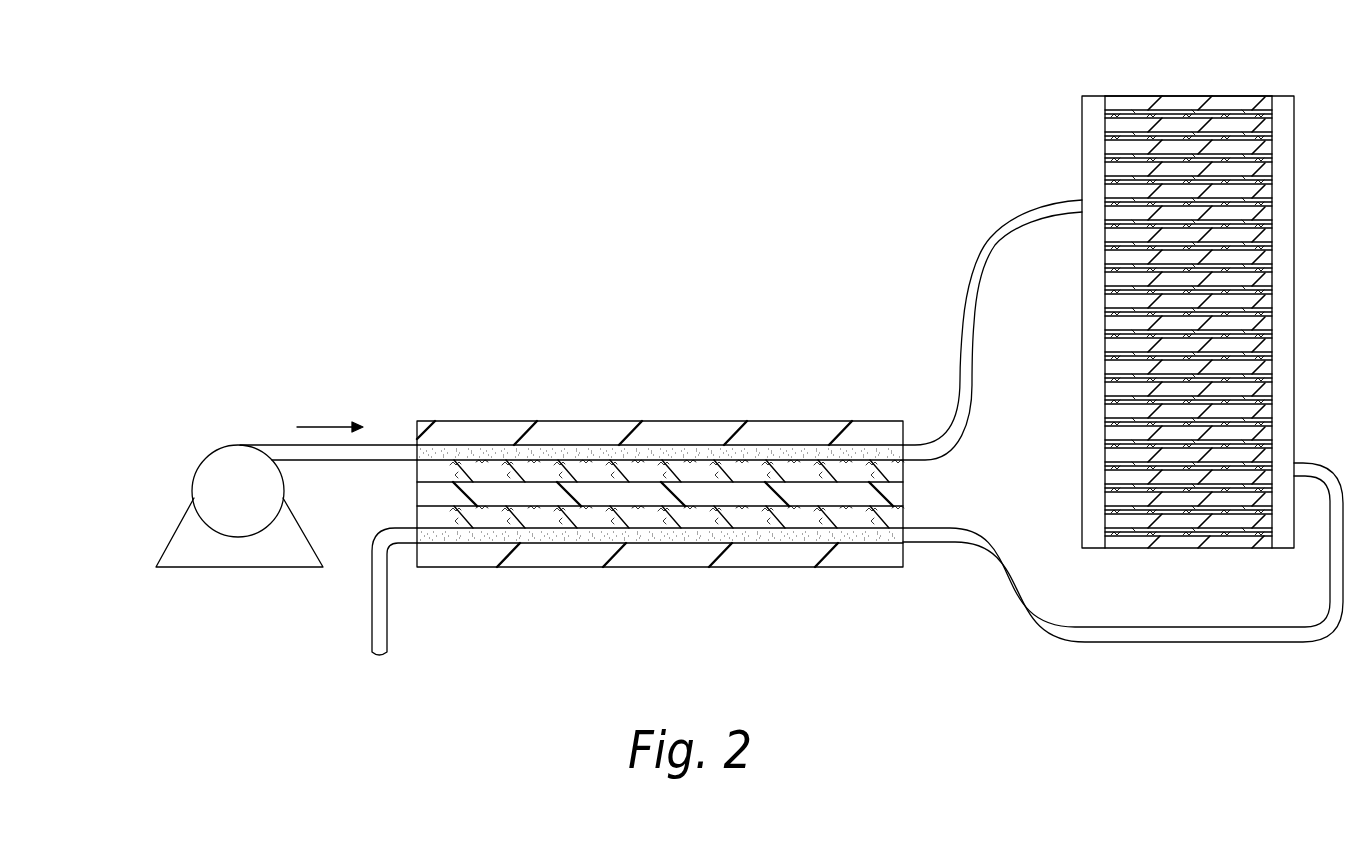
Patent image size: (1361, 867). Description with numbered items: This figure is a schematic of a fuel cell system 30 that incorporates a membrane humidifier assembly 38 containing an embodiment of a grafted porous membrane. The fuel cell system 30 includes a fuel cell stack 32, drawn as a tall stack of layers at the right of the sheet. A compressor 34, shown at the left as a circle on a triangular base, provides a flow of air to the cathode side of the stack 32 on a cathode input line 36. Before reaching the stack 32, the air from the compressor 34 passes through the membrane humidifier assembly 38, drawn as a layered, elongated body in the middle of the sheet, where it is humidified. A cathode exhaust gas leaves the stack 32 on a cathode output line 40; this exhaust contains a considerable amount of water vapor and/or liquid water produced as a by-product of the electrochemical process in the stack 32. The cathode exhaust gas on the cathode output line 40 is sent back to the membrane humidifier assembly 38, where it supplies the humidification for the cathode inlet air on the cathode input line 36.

The fuel cell system 30 is at (627, 177).
The fuel cell stack 32 is at (1143, 97).
The compressor 34 is at (213, 450).
The cathode input line 36 is at (972, 276).
The membrane humidifier assembly 38 is at (548, 418).
The cathode output line 40 is at (1123, 642).